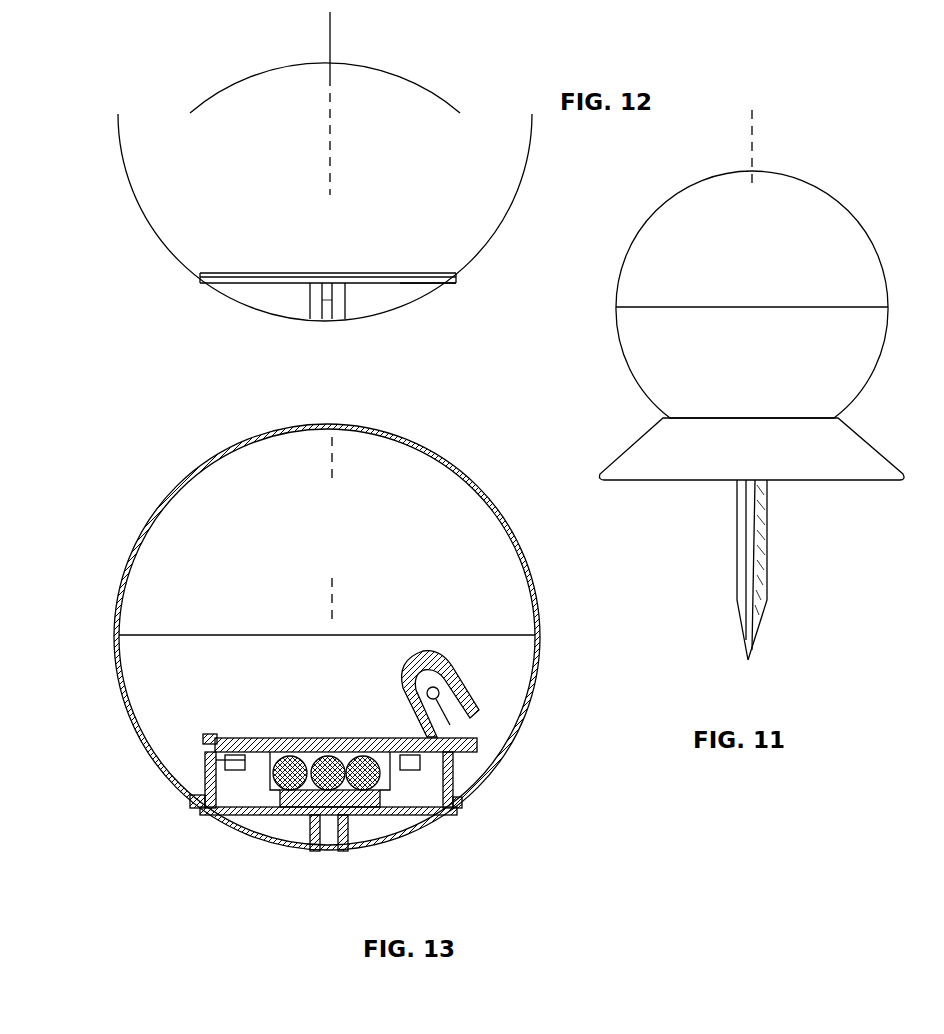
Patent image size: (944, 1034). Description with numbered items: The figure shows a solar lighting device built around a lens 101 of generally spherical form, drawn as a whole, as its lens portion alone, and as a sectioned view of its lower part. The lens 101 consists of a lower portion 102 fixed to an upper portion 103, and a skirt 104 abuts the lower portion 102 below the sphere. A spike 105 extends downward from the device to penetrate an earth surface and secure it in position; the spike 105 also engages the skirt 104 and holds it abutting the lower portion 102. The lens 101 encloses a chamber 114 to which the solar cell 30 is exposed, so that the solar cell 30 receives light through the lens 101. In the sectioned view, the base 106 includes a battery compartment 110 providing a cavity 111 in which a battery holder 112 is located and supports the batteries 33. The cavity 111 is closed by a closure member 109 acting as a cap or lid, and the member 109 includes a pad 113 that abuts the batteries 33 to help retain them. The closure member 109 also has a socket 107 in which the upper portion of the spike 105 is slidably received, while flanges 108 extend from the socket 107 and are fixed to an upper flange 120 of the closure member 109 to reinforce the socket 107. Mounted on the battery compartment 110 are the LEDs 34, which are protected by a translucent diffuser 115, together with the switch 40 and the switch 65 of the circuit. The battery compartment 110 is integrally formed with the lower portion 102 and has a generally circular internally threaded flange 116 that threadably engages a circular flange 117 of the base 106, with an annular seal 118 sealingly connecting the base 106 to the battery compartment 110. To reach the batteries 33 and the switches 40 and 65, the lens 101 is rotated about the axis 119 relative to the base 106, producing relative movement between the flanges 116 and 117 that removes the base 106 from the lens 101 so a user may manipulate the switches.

In FIG. 12, the lens 101 is at (130, 209).
In FIG. 11, the lens 101 is at (614, 336).
In FIG. 13, the lens 101 is at (327, 637).
In FIG. 11, the lower portion 102 is at (752, 362).
In FIG. 11, the upper portion 103 is at (752, 239).
In FIG. 11, the skirt 104 is at (752, 449).
In FIG. 11, the spike 105 is at (768, 565).
In FIG. 12, the base 106 is at (275, 291).
In FIG. 13, the base 106 is at (342, 858).
In FIG. 12, the socket 107 is at (355, 303).
In FIG. 13, the socket 107 is at (350, 832).
In FIG. 12, the flanges 108 is at (404, 290).
In FIG. 13, the flanges 108 is at (295, 847).
In FIG. 12, the closure member 109 is at (304, 265).
In FIG. 13, the closure member 109 is at (262, 845).
In FIG. 13, the battery compartment 110 is at (196, 788).
In FIG. 13, the cavity 111 is at (222, 818).
In FIG. 13, the battery holder 112 is at (270, 750).
In FIG. 13, the pad 113 is at (283, 822).
In FIG. 13, the chamber 114 is at (327, 584).
In FIG. 13, the translucent diffuser 115 is at (445, 660).
In FIG. 13, the internally threaded flange 116 is at (205, 773).
In FIG. 13, the circular flange 117 is at (258, 818).
In FIG. 13, the annular seal 118 is at (196, 812).
In FIG. 13, the axis 119 is at (335, 465).
In FIG. 12, the upper flange 120 is at (393, 281).
In FIG. 13, the upper flange 120 is at (392, 818).
In FIG. 13, the solar cell 30 is at (247, 738).
In FIG. 13, the batteries 33 is at (315, 745).
In FIG. 13, the LEDs 34 is at (437, 690).
In FIG. 13, the switch 40 is at (205, 760).
In FIG. 13, the switch 65 is at (412, 778).